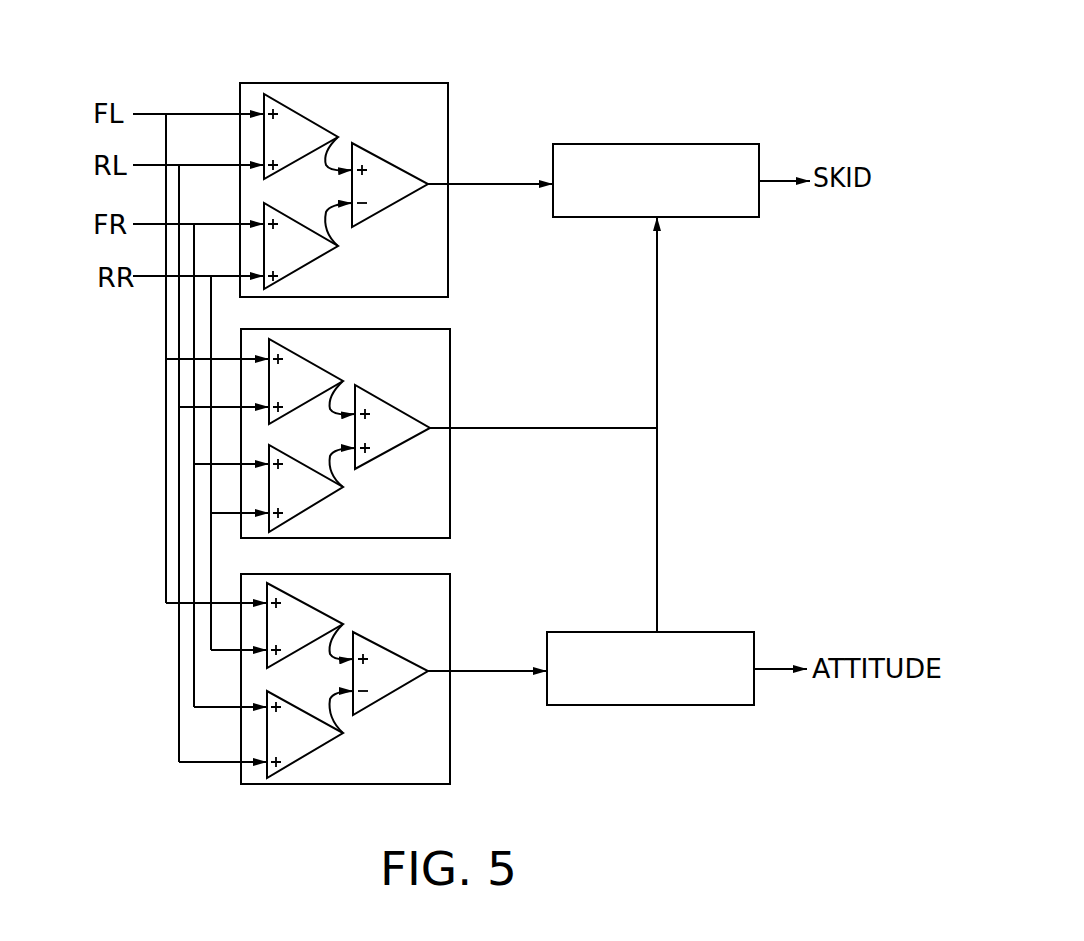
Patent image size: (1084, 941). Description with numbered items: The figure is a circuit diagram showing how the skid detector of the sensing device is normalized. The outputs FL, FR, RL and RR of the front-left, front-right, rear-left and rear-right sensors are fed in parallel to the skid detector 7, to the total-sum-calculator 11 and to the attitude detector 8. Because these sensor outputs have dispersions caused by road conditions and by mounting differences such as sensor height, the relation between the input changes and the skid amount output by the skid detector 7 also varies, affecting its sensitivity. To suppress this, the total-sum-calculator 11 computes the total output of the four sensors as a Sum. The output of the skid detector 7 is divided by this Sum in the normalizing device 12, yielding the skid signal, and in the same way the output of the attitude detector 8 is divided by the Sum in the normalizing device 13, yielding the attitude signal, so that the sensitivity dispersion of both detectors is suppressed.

The skid detector 7 is at (437, 82).
The total-sum-calculator 11 is at (450, 380).
The attitude detector 8 is at (450, 636).
The normalizing device 12 is at (627, 146).
The normalizing device 13 is at (730, 632).